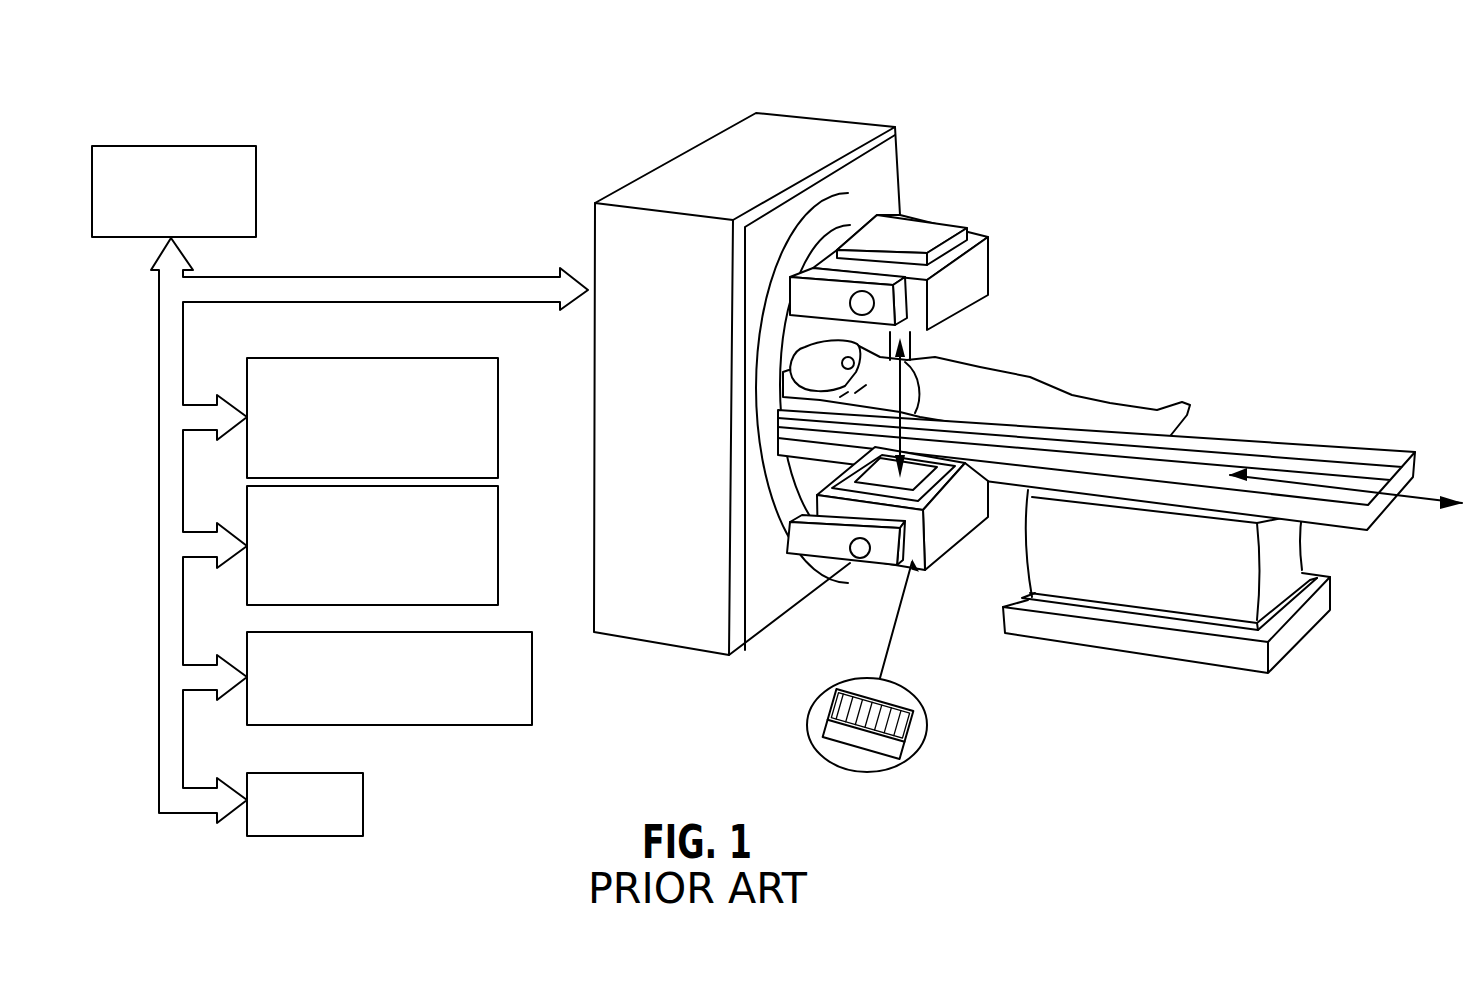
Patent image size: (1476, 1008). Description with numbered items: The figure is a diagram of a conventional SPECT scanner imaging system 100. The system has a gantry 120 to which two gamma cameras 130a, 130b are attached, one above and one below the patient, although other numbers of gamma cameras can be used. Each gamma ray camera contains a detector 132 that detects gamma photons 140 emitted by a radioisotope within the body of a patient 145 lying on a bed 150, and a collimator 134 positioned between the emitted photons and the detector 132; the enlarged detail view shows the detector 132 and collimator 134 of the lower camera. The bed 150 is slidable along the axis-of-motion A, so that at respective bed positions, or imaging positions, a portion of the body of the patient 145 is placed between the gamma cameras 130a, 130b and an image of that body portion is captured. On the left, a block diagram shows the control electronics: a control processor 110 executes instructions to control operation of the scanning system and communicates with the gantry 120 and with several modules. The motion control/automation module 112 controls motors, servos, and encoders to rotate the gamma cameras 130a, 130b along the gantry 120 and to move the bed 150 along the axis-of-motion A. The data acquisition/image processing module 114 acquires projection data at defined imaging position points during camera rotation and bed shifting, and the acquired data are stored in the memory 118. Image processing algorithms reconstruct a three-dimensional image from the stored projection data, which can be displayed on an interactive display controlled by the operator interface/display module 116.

The SPECT scanner imaging system 100 is at (609, 91).
The control processor 110 is at (190, 233).
The motion control/automation module 112 is at (390, 468).
The data acquisition/image processing module 114 is at (390, 598).
The operator interface/display module 116 is at (408, 720).
The memory 118 is at (323, 828).
The gantry 120 is at (807, 572).
The gamma camera 130a is at (977, 273).
The gamma camera 130b is at (937, 547).
The detector 132 is at (887, 743).
The collimator 134 is at (905, 723).
The gamma photons 140 is at (917, 372).
The patient 145 is at (1112, 413).
The bed 150 is at (1203, 427).
The axis-of-motion A is at (1412, 505).